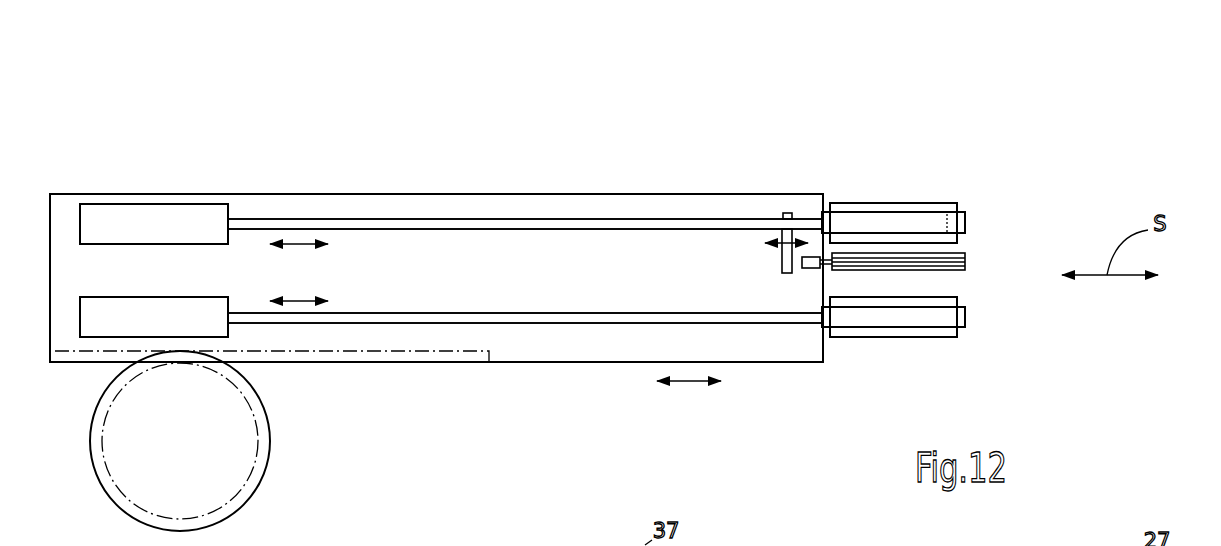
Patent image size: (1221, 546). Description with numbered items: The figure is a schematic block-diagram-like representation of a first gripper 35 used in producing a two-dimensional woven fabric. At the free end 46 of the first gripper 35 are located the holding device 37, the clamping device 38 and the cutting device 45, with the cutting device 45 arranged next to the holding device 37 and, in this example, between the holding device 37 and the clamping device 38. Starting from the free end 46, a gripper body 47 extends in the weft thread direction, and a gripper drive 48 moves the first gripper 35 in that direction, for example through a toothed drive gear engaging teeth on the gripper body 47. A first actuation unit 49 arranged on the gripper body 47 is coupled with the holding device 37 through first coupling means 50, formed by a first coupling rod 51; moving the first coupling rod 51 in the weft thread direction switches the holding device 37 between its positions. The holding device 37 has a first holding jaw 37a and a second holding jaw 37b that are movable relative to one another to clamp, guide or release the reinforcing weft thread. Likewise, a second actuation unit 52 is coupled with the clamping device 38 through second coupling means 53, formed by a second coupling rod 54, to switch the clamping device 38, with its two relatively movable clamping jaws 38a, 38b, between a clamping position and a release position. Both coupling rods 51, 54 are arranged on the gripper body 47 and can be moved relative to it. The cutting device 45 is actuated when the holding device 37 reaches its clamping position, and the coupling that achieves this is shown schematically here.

The first gripper 35 is at (865, 115).
The holding device 37 is at (941, 164).
The first holding jaw 37a is at (925, 215).
The second holding jaw 37b is at (897, 220).
The clamping device 38 is at (952, 370).
The clamping jaw 38a is at (930, 337).
The clamping jaw 38b is at (965, 315).
The cutting device 45 is at (975, 258).
The free end 46 is at (860, 193).
The gripper body 47 is at (527, 362).
The gripper drive 48 is at (75, 420).
The first actuation unit 49 is at (143, 220).
The first coupling means 50 is at (497, 225).
The first coupling rod 51 is at (525, 224).
The second actuation unit 52 is at (180, 315).
The second coupling means 53 is at (600, 315).
The second coupling rod 54 is at (525, 318).